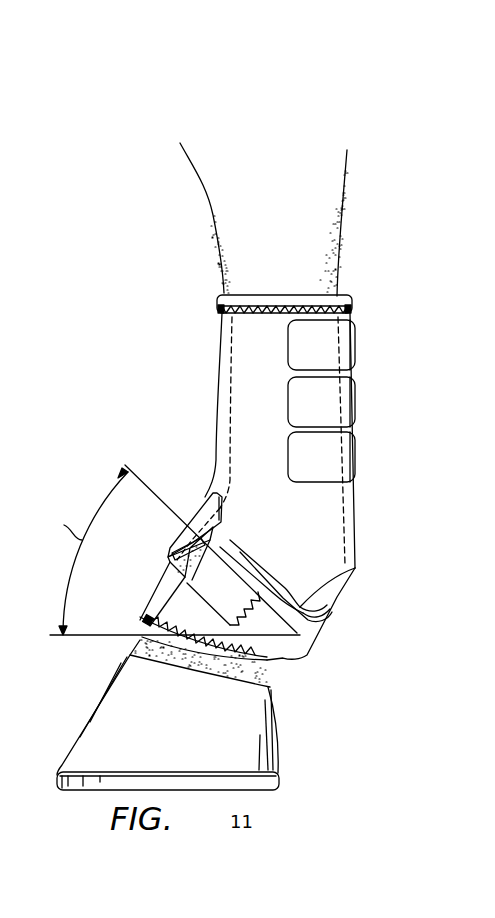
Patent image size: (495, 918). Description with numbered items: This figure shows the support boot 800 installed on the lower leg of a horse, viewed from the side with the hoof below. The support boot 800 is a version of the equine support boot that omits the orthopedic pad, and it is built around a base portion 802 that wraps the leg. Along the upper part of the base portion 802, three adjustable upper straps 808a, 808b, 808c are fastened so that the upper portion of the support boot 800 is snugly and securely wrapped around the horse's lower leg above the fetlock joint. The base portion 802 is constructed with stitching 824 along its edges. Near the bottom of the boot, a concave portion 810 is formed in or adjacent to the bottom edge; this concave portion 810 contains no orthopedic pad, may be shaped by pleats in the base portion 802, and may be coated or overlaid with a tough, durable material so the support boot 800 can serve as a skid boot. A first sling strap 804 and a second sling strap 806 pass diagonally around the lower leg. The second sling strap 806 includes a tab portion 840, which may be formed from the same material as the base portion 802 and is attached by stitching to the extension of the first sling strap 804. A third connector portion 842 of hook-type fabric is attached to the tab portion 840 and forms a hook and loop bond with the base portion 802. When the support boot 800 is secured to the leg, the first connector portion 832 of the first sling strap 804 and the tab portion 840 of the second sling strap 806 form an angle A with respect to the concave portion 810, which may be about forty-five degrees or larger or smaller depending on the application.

The support boot 800 is at (182, 383).
The base portion 802 is at (243, 347).
The first sling strap 804 is at (253, 552).
The second sling strap 806 is at (330, 618).
The upper strap 808a is at (356, 345).
The upper strap 808b is at (356, 400).
The upper strap 808c is at (356, 455).
The concave portion 810 is at (364, 568).
The stitching 824 is at (354, 308).
The first connector portion 832 is at (183, 573).
The tab portion 840 is at (307, 662).
The third connector portion 842 is at (190, 512).